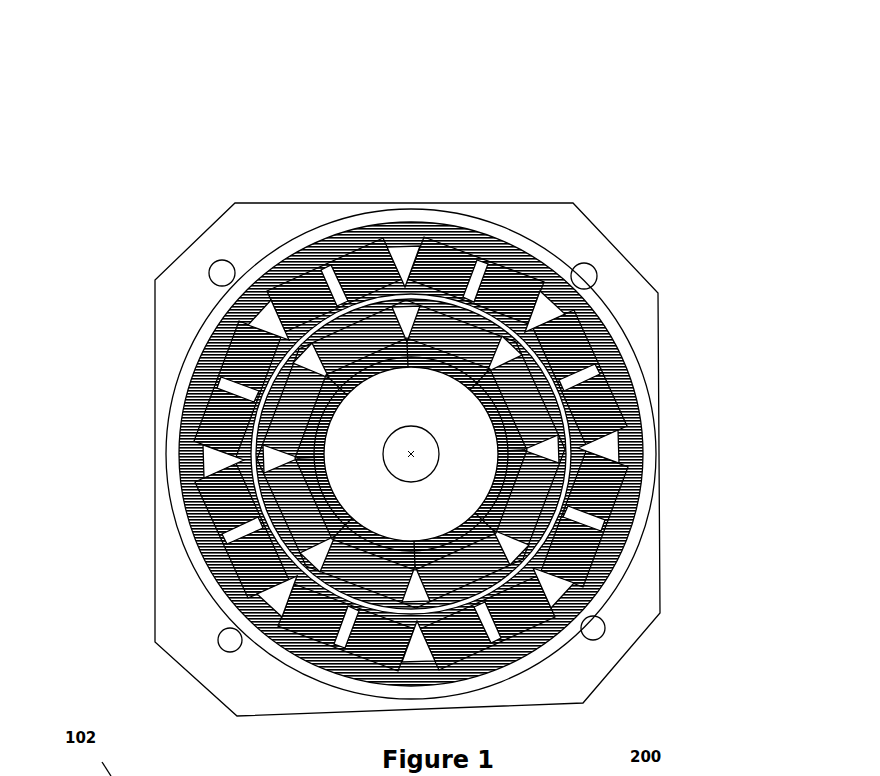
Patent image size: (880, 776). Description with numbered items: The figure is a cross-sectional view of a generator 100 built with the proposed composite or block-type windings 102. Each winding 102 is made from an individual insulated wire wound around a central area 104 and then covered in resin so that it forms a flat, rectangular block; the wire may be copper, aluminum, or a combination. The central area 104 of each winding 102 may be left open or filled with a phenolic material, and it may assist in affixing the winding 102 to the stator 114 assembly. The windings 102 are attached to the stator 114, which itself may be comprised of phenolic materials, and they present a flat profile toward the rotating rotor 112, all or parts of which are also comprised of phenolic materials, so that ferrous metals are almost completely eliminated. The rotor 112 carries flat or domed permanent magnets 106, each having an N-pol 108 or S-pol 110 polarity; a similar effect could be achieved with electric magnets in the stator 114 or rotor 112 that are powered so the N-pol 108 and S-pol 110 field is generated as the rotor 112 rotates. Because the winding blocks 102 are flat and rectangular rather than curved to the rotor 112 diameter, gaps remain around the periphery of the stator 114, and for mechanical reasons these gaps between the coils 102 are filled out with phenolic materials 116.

The generator 100 is at (602, 187).
The block-type winding 102 is at (508, 267).
The central area 104 is at (477, 263).
The permanent magnet 106 is at (315, 317).
The N-pol 108 is at (363, 316).
The S-pol 110 is at (345, 353).
The rotor 112 is at (435, 512).
The stator 114 is at (597, 327).
The phenolic material 116 is at (210, 453).